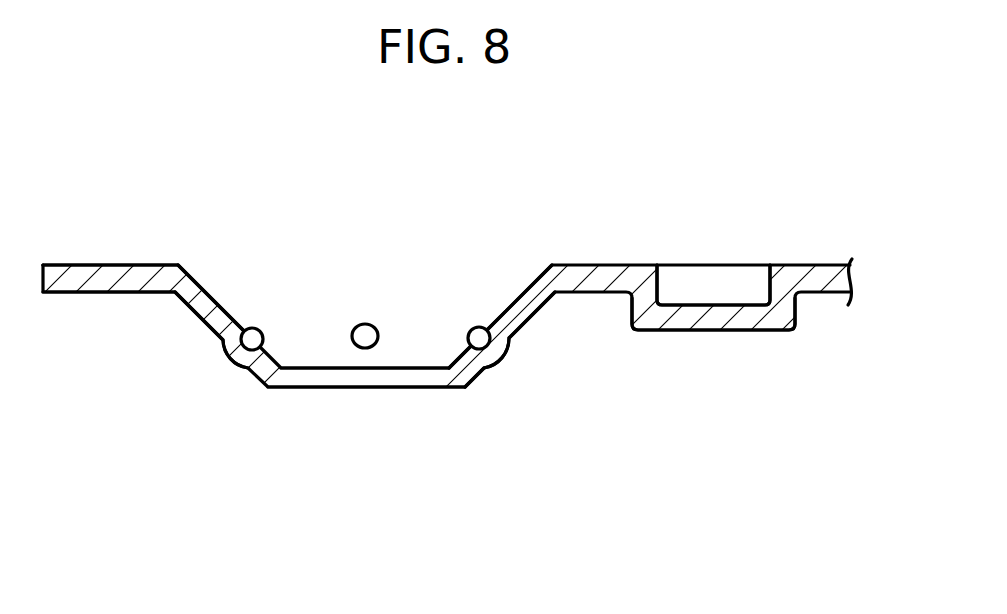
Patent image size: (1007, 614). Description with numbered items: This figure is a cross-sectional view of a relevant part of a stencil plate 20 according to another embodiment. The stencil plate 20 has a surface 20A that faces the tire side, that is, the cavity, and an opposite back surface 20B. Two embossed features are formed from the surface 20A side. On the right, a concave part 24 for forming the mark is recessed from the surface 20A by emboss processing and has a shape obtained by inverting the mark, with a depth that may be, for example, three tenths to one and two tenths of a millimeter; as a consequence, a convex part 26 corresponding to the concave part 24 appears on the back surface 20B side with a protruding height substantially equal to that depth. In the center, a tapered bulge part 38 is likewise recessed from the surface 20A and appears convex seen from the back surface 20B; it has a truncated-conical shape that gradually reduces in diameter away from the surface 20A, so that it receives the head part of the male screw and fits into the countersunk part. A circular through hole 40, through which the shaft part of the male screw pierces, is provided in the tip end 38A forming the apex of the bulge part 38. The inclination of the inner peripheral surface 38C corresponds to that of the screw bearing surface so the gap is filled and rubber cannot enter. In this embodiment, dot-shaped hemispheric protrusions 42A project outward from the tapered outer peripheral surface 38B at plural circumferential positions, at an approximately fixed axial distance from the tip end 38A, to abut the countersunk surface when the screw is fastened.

The stencil plate 20 is at (416, 237).
The surface 20A is at (98, 266).
The back surface 20B is at (113, 293).
The concave part 24 is at (723, 305).
The convex part 26 is at (723, 331).
The bulge part 38 is at (200, 317).
The tip end 38A is at (471, 352).
The tapered outer peripheral surface 38B is at (524, 326).
The inner peripheral surface 38C is at (503, 306).
The through hole 40 is at (312, 380).
The dot-shaped protrusions 42A is at (236, 364).